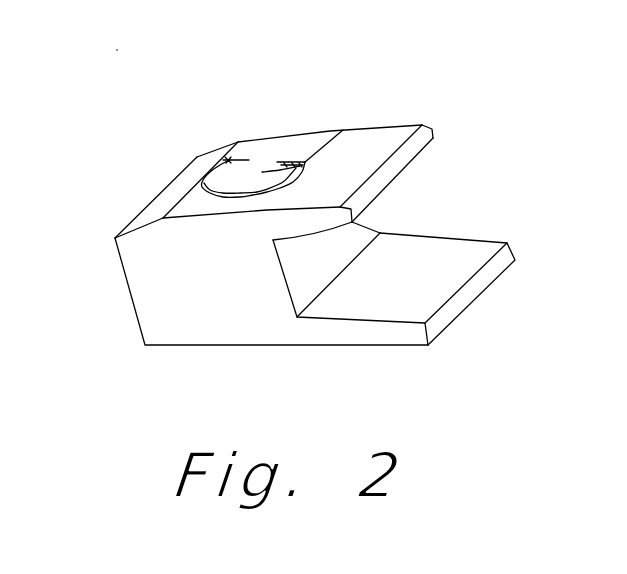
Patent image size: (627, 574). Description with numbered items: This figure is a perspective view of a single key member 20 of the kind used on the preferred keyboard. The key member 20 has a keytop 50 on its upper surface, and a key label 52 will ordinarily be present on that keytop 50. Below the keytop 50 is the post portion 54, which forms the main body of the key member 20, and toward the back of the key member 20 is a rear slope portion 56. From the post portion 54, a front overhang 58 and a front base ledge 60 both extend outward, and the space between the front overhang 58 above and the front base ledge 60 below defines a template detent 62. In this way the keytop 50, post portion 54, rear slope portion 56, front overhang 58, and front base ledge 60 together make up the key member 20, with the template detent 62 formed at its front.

The key member 20 is at (185, 122).
The keytop 50 is at (315, 142).
The key label 52 is at (286, 157).
The post portion 54 is at (248, 294).
The rear slope portion 56 is at (167, 196).
The front overhang 58 is at (377, 168).
The front base ledge 60 is at (393, 307).
The template detent 62 is at (464, 210).